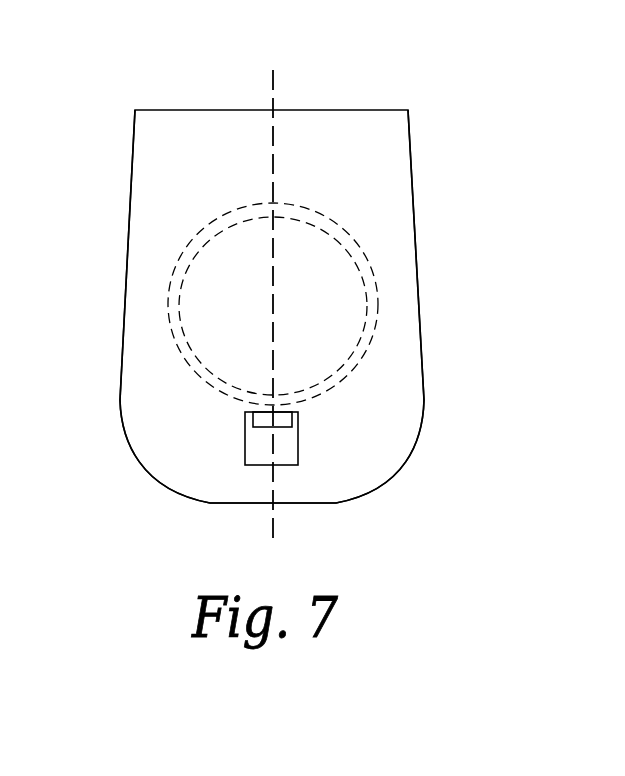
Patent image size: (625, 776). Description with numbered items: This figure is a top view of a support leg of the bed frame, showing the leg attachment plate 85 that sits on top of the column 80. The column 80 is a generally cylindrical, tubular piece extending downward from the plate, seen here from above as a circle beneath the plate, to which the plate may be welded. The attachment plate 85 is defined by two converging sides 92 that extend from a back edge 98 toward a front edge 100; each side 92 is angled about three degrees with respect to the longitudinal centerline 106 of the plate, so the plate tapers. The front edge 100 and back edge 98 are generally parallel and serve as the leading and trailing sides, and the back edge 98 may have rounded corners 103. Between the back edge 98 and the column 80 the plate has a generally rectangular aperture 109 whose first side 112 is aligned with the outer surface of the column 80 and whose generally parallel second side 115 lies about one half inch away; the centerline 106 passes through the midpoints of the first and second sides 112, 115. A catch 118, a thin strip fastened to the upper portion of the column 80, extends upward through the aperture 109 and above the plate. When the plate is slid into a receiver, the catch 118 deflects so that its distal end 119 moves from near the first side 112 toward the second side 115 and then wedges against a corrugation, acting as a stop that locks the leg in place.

The leg attachment plate 85 is at (457, 97).
The front edge 100 is at (205, 110).
The longitudinal centerline 106 is at (273, 80).
The column 80 is at (358, 252).
The converging sides 92 is at (127, 280).
The aperture 109 is at (299, 443).
The catch 118 is at (245, 438).
The first side 112 is at (264, 410).
The distal end 119 is at (292, 419).
The second side 115 is at (258, 467).
The rounded corners 103 is at (170, 490).
The back edge 98 is at (300, 505).